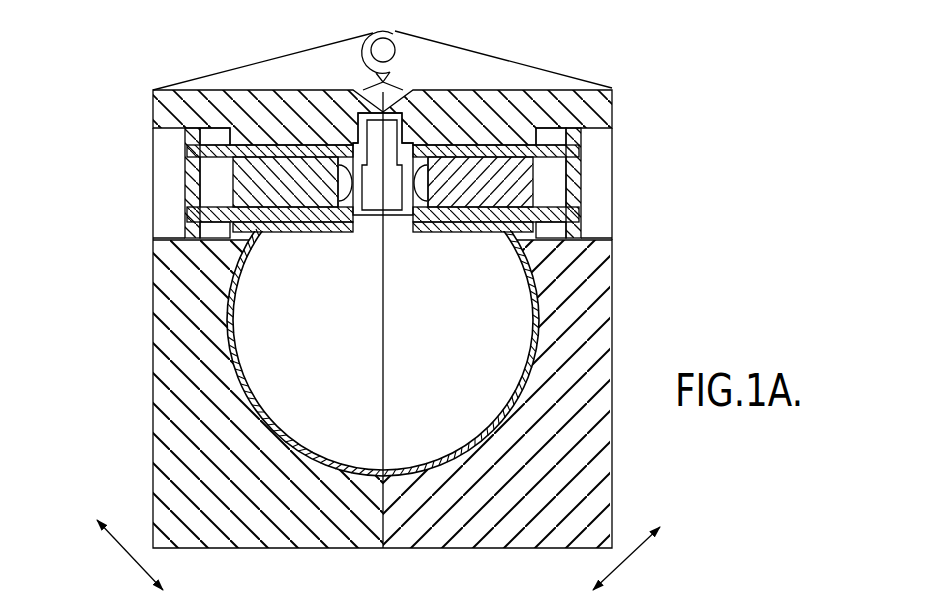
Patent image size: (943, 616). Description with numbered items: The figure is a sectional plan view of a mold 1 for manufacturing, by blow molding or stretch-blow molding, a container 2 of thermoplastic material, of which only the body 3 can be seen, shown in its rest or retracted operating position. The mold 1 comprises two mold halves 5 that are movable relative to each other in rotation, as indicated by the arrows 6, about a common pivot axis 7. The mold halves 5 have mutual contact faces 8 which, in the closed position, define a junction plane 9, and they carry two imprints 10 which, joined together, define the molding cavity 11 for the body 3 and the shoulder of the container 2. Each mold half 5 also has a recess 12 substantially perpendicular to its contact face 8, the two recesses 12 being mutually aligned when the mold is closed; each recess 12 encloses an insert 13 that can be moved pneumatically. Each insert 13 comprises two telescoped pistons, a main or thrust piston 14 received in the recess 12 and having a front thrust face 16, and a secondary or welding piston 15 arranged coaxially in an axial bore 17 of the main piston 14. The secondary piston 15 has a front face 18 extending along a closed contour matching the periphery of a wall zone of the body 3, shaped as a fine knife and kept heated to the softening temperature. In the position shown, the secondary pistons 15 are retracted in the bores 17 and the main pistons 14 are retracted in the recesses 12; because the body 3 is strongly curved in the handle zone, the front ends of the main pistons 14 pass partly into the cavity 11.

The mold 1 is at (147, 398).
The container 2 is at (518, 380).
The body 3 is at (421, 470).
The mold halves 5 is at (220, 453).
The arrows 6 is at (122, 548).
The pivot axis 7 is at (378, 49).
The contact faces 8 is at (376, 320).
The junction plane 9 is at (382, 400).
The imprints 10 is at (227, 343).
The molding cavity 11 is at (325, 367).
The recesses 12 is at (172, 140).
The inserts 13 is at (215, 189).
The main piston 14 is at (253, 234).
The secondary piston 15 is at (262, 185).
The front thrust face 16 is at (363, 187).
The axial bore 17 is at (240, 203).
The front face 18 is at (362, 190).